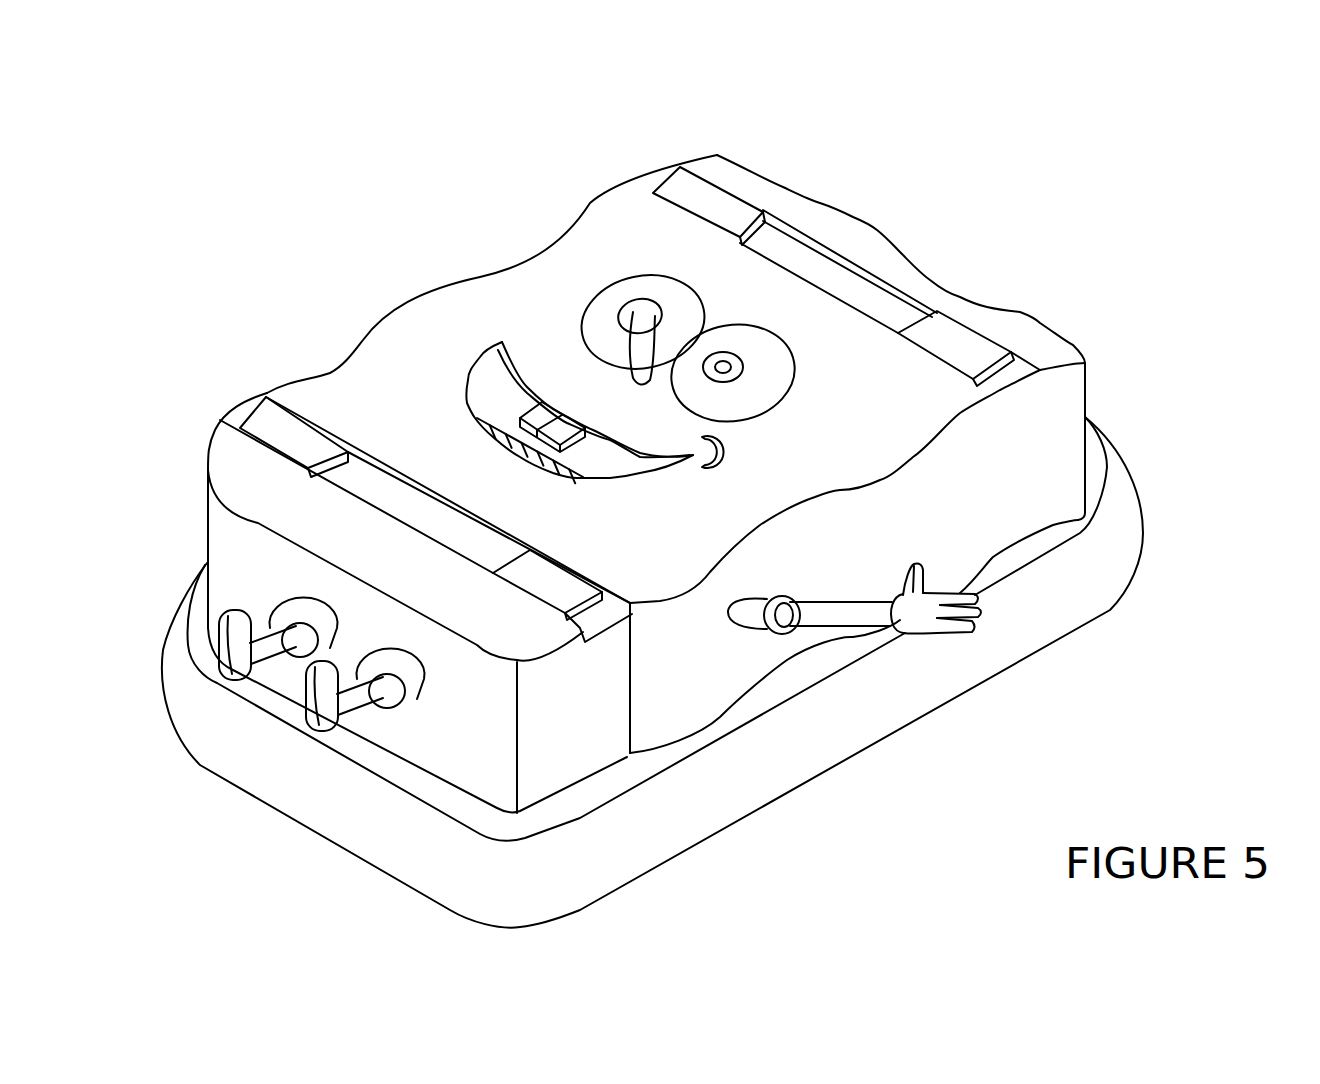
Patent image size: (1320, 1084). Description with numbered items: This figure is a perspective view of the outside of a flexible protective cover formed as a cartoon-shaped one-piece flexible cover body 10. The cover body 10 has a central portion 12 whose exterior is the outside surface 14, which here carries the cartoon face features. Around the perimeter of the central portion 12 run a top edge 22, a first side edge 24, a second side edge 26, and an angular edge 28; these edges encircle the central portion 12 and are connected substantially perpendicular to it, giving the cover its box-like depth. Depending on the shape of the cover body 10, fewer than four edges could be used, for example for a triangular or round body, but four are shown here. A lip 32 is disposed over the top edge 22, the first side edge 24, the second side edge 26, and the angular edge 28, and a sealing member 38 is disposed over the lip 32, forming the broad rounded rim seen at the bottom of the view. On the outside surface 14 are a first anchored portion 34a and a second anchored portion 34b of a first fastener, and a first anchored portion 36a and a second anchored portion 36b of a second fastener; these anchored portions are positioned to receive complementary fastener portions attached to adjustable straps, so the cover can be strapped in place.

The cartoon-shaped one-piece flexible cover body 10 is at (278, 218).
The central portion 12 is at (692, 475).
The outside surface 14 is at (552, 328).
The top edge 22 is at (900, 252).
The first side edge 24 is at (472, 275).
The second side edge 26 is at (685, 668).
The angular edge 28 is at (455, 723).
The lip 32 is at (812, 668).
The first anchored portion of a first fastener 34a is at (700, 198).
The second anchored portion of a first fastener 34b is at (965, 348).
The first anchored portion of a second fastener 36a is at (288, 437).
The second anchored portion of a second fastener 36b is at (560, 590).
The sealing member 38 is at (1065, 592).